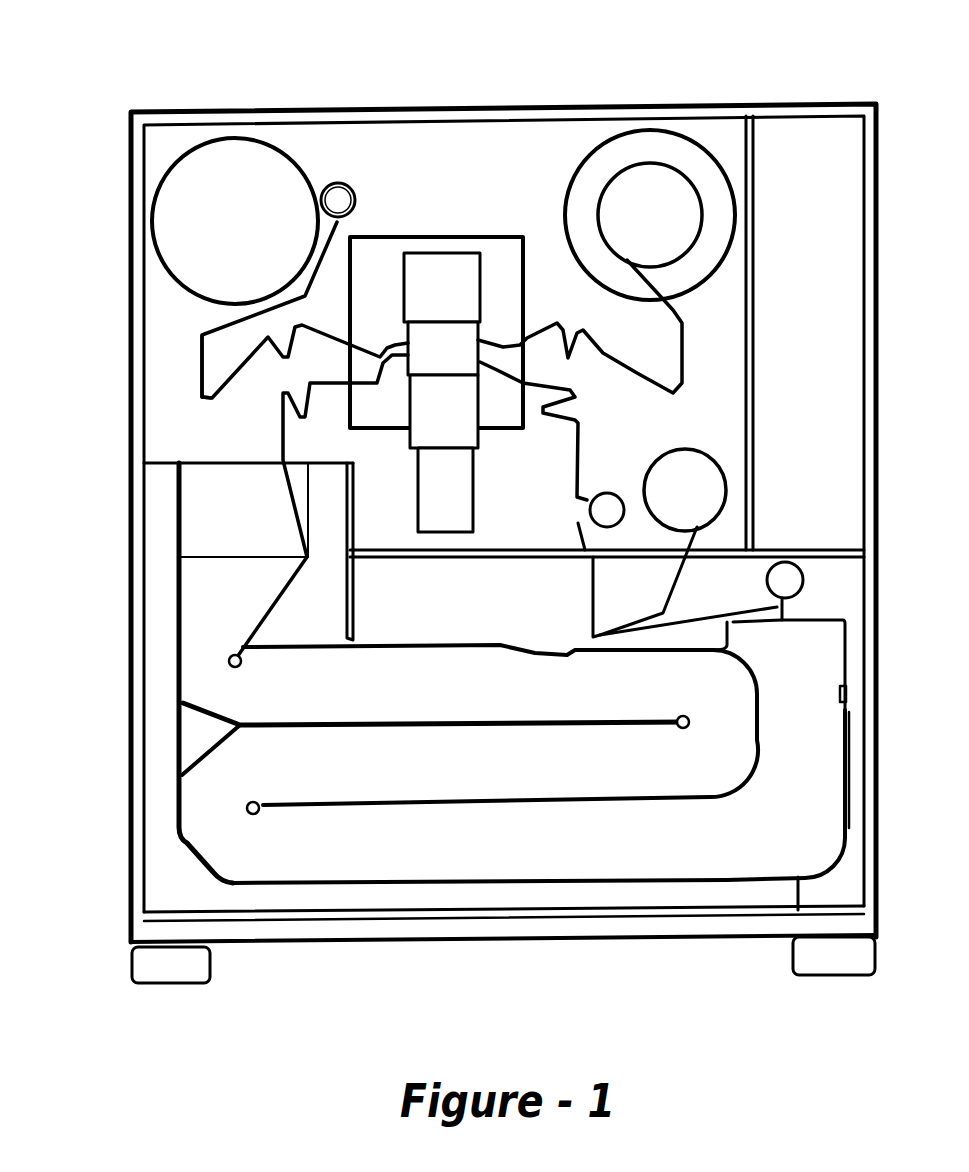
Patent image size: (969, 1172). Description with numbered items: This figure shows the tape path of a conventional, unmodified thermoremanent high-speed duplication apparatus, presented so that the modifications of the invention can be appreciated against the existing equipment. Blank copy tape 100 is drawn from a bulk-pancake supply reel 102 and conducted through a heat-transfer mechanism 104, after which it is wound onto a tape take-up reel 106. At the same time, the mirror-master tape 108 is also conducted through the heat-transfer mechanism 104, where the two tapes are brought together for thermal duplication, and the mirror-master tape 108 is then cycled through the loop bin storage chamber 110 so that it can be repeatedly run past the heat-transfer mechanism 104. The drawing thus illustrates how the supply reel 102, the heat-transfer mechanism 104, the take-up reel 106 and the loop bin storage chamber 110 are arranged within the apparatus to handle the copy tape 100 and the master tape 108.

The blank copy tape 100 is at (223, 323).
The bulk-pancake supply reel 102 is at (668, 148).
The heat-transfer mechanism 104 is at (455, 270).
The tape take-up reel 106 is at (258, 167).
The mirror-master tape 108 is at (200, 385).
The loop bin storage chamber 110 is at (223, 588).